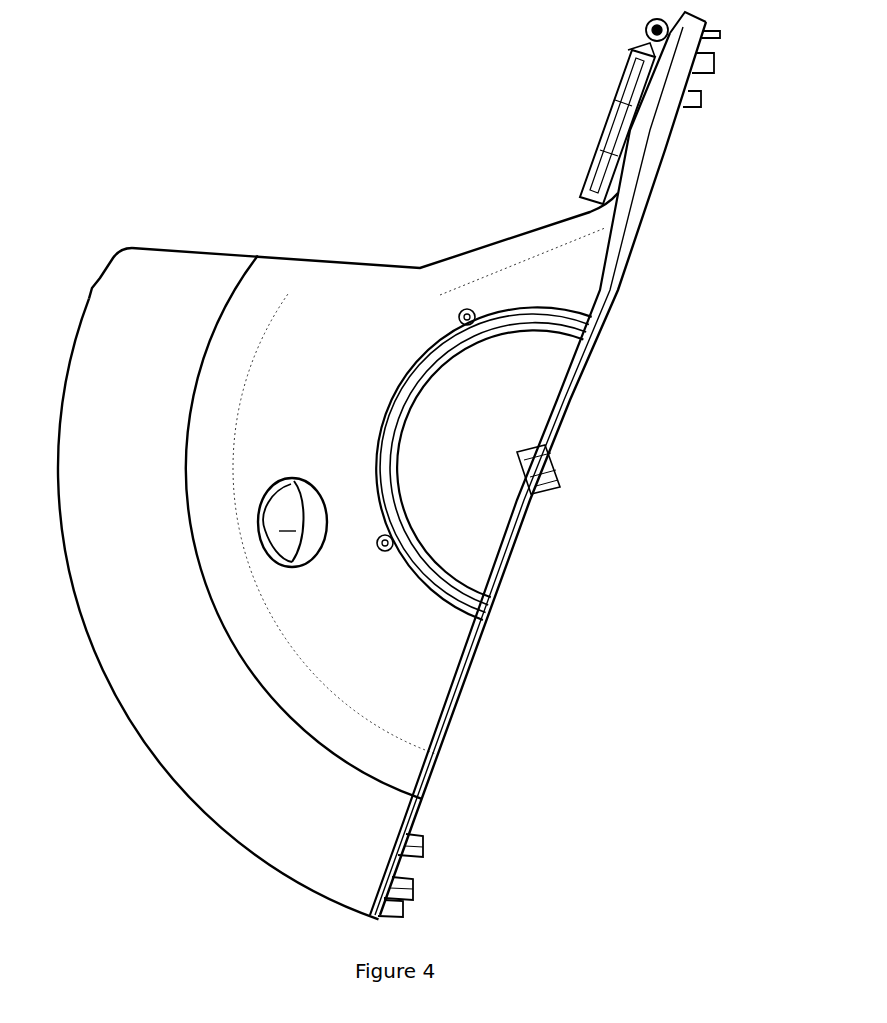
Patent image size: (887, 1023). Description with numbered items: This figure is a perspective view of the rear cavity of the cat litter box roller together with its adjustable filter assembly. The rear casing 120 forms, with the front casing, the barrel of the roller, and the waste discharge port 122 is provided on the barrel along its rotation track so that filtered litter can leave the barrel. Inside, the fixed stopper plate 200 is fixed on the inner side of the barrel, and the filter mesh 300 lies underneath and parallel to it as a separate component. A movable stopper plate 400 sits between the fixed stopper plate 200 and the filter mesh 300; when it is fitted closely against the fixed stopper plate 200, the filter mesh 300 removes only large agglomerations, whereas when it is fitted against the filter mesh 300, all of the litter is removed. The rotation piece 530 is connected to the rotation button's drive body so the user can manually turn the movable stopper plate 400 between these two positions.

The rear casing 120 is at (190, 287).
The waste discharge port 122 is at (607, 112).
The fixed stopper plate 200 is at (353, 400).
The filter mesh 300 is at (197, 643).
The movable stopper plate 400 is at (356, 455).
The rotation piece 530 is at (300, 540).